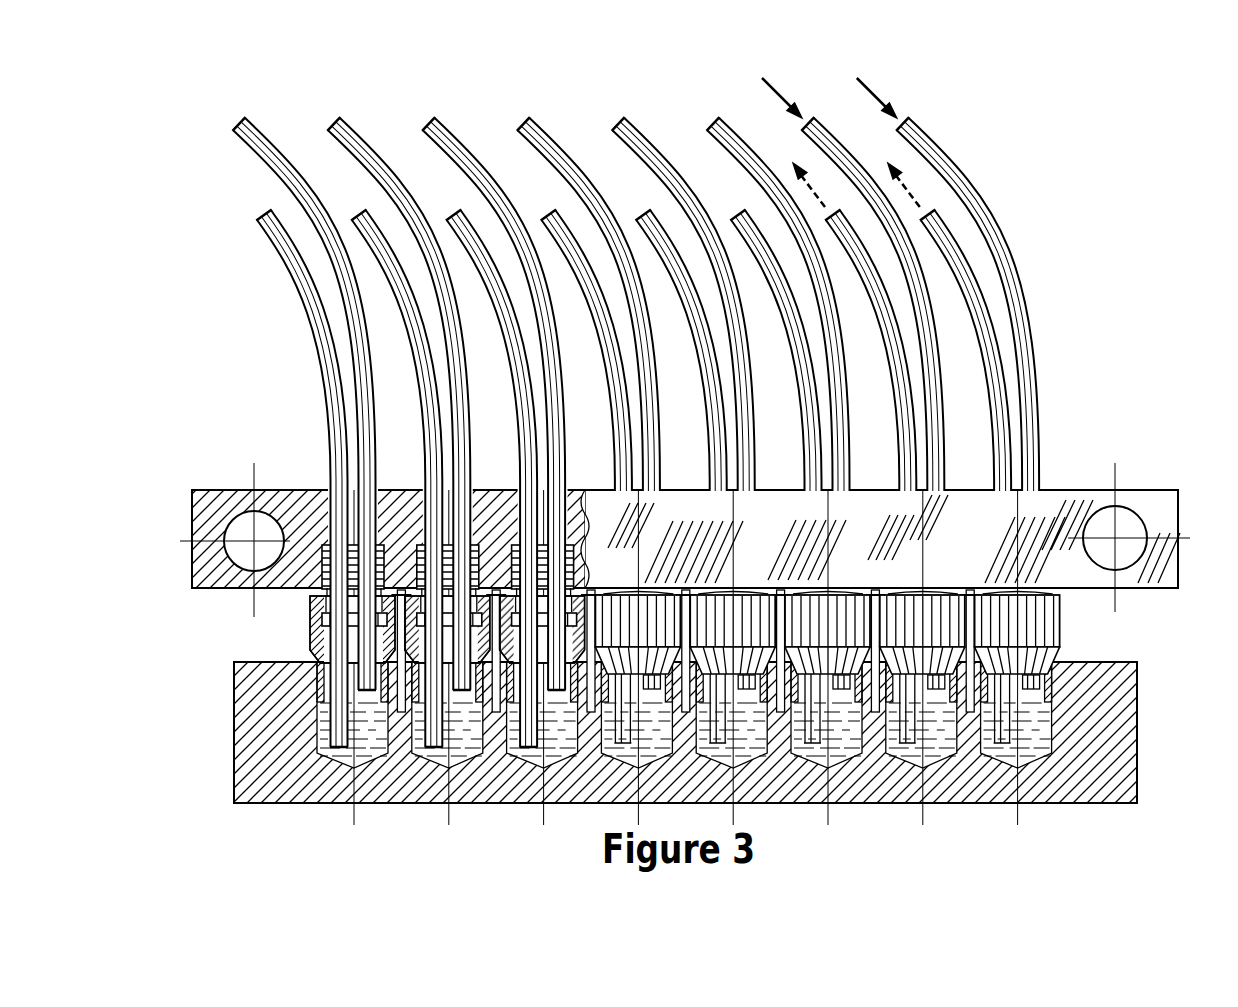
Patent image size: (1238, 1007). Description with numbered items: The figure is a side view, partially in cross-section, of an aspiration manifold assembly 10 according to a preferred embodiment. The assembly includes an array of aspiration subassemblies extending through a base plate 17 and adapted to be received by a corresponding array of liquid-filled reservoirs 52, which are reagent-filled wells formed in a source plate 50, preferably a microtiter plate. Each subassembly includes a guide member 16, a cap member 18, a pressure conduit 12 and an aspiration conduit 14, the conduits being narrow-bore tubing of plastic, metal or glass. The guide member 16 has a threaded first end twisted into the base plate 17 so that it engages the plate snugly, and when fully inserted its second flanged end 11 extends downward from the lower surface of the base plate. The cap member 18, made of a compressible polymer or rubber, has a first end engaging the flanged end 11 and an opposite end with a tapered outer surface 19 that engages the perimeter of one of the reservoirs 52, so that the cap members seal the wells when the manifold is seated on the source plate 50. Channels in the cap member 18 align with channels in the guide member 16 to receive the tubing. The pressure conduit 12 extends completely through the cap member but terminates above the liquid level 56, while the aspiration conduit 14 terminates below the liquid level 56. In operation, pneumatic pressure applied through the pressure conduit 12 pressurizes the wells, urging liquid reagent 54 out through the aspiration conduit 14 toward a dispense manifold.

The aspiration manifold assembly 10 is at (703, 451).
The flanged end 11 is at (345, 622).
The pressure conduit 12 is at (246, 122).
The aspiration conduit 14 is at (266, 241).
The guide member 16 is at (340, 575).
The base plate 17 is at (1153, 500).
The cap member 18 is at (317, 660).
The tapered outer surface 19 is at (1060, 654).
The source plate 50 is at (1121, 775).
The reservoirs 52 is at (1056, 678).
The liquid reagent 54 is at (1056, 731).
The liquid level 56 is at (1044, 697).